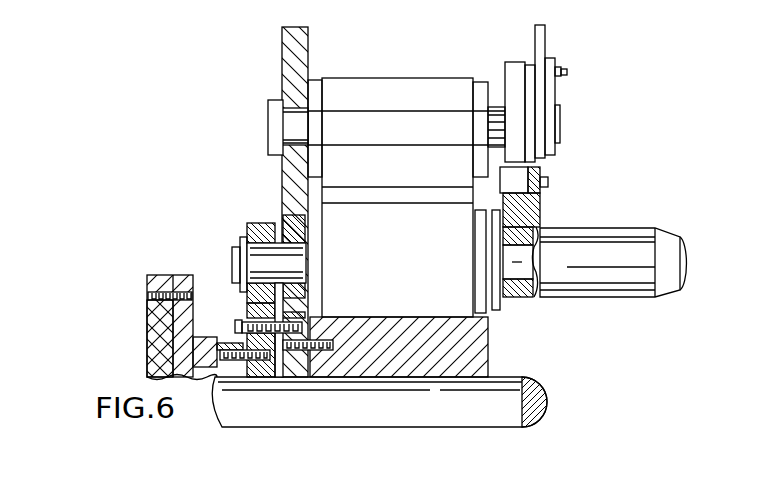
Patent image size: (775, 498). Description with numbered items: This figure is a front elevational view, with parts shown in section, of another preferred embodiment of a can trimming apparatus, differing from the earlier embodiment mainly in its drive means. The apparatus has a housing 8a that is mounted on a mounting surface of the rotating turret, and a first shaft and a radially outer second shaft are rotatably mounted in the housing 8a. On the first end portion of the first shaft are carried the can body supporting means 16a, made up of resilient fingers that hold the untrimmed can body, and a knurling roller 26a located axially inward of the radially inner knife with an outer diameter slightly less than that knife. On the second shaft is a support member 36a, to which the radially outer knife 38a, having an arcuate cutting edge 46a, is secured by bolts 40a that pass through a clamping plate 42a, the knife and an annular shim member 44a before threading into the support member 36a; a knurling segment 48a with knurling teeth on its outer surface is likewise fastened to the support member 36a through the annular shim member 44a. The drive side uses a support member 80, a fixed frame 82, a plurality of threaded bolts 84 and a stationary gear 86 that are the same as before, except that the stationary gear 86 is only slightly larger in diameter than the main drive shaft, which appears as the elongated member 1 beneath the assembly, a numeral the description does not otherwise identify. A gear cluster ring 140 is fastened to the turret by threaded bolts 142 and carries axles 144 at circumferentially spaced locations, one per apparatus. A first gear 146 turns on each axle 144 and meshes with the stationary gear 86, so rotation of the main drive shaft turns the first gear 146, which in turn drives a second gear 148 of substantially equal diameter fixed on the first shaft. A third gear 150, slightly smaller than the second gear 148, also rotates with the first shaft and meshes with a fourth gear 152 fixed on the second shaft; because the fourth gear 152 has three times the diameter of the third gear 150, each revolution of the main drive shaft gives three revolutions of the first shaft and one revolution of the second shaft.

The rail 1 is at (412, 412).
The housing 8a is at (367, 78).
The can body supporting means 16a is at (645, 228).
The knurling roller 26a is at (527, 290).
The support member 36a is at (508, 68).
The radially outer knife 38a is at (546, 50).
The bolts 40a is at (567, 72).
The clamping plate 42a is at (548, 153).
The annular shim member 44a is at (530, 62).
The arcuate cutting edge 46a is at (545, 26).
The knurling segment 48a is at (538, 213).
The support member 80 is at (193, 355).
The fixed frame 82 is at (148, 333).
The threaded bolts 84 is at (197, 300).
The stationary gear 86 is at (258, 363).
The gear cluster ring 140 is at (308, 318).
The threaded bolts 142 is at (343, 327).
The axles 144 is at (237, 327).
The first gear 146 is at (245, 313).
The second gear 148 is at (252, 245).
The third gear 150 is at (300, 240).
The fourth gear 152 is at (284, 66).